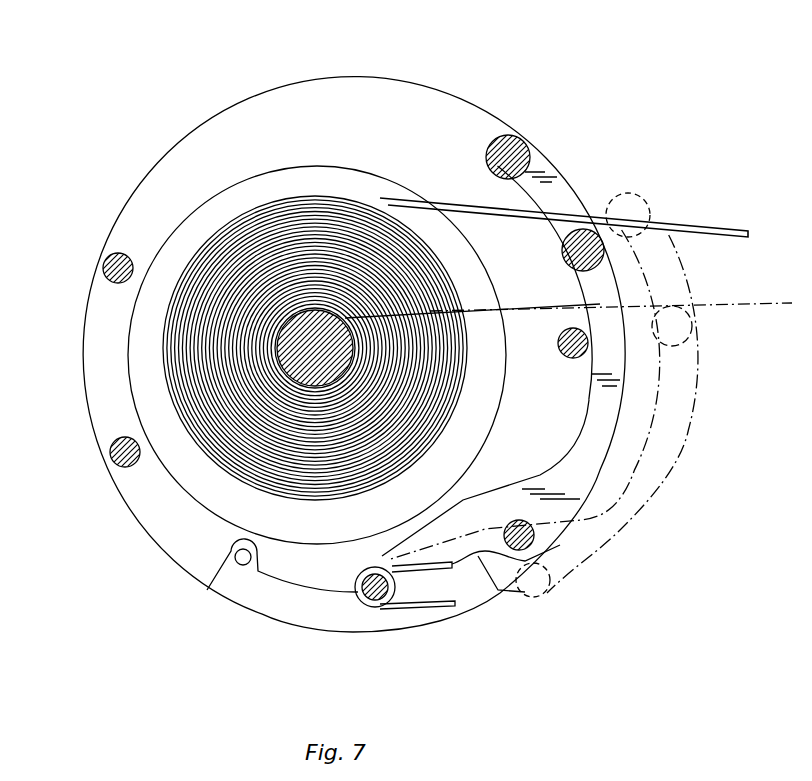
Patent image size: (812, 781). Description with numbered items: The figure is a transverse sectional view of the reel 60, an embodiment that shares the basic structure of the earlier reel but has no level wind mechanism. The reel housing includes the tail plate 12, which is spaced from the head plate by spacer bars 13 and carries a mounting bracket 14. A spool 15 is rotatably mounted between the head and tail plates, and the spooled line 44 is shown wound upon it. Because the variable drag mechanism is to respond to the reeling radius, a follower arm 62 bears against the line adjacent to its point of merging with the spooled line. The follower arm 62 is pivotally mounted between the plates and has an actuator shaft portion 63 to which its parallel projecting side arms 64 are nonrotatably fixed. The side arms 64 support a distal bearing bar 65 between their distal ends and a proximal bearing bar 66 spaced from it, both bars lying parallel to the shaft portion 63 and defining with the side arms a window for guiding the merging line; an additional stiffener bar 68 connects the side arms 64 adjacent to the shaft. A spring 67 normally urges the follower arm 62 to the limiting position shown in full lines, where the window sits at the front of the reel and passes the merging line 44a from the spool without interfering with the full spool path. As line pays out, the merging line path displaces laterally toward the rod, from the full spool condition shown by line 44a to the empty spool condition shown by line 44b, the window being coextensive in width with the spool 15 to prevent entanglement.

The reel 60 is at (229, 80).
The tail plate 12 is at (389, 73).
The spool 15 is at (322, 170).
The line 44 is at (172, 345).
The merging line (full spool condition) 44a is at (722, 226).
The merging line (empty spool condition) 44b is at (725, 302).
The spacer bars 13 is at (103, 266).
The follower arm 62 is at (562, 164).
The side arms 64 is at (587, 418).
The distal bearing bar 65 is at (490, 150).
The proximal bearing bar 66 is at (562, 253).
The stiffener bar 68 is at (560, 545).
The actuator shaft portion 63 is at (371, 608).
The spring 67 is at (436, 606).
The mounting bracket 14 is at (281, 607).